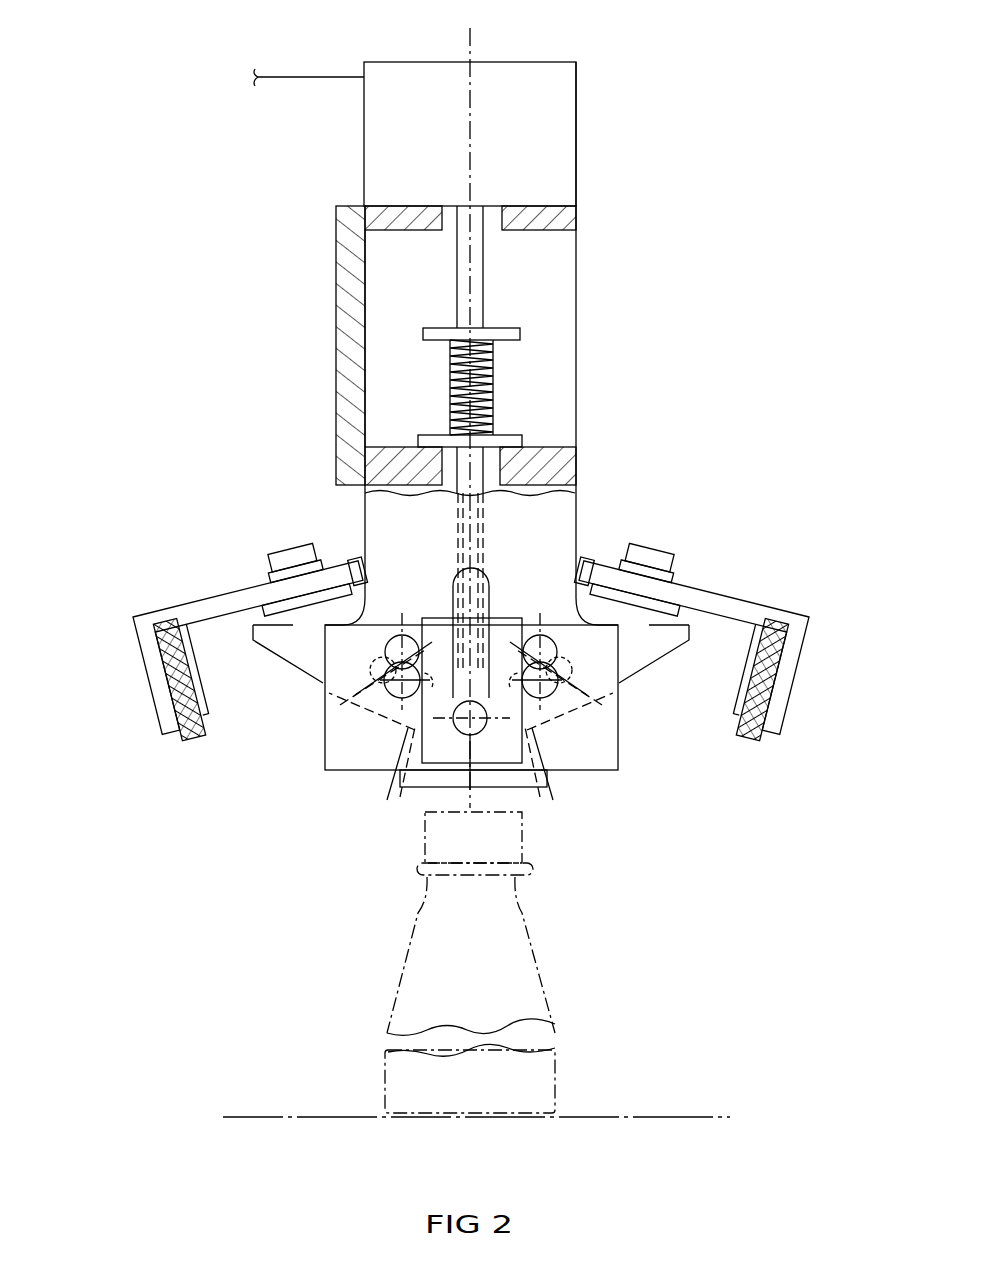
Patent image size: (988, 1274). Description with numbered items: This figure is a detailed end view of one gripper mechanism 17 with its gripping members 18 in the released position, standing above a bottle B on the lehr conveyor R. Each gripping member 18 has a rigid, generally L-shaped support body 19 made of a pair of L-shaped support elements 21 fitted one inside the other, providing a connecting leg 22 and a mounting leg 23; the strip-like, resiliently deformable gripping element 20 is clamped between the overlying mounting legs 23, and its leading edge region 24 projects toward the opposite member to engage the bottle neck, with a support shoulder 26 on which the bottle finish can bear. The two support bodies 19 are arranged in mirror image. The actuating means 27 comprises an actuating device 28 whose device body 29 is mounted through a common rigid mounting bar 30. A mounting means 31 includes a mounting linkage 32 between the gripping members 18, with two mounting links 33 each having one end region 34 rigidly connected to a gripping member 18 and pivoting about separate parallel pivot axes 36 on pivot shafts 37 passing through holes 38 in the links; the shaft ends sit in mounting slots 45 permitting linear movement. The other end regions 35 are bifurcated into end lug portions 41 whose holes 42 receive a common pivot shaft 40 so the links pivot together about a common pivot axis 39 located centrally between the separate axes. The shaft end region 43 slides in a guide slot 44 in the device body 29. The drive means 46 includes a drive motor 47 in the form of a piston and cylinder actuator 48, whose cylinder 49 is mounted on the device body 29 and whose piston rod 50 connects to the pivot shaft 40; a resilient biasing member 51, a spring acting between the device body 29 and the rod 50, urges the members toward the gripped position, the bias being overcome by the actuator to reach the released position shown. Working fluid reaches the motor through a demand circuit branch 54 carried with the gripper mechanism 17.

The gripper mechanism 17 is at (192, 268).
The gripping member 18 is at (110, 656).
The support body 19 is at (145, 712).
The gripping element 20 is at (172, 760).
The support element 21 is at (134, 612).
The connecting leg 22 is at (236, 596).
The mounting leg 23 is at (160, 688).
The leading edge region 24 is at (170, 745).
The support shoulder 26 is at (198, 734).
The actuating means 27 is at (668, 487).
The actuating device 28 is at (608, 474).
The device body 29 is at (552, 298).
The mounting bar 30 is at (340, 355).
The mounting means 31 is at (552, 560).
The mounting linkage 32 is at (342, 762).
The mounting link 33 is at (350, 700).
The end region 34 is at (272, 632).
The other end region 35 is at (500, 773).
The pivot axis 36 is at (385, 690).
The pivot shaft 37 is at (400, 700).
The hole 38 is at (330, 660).
The common pivot axis 39 is at (482, 736).
The pivot shaft 40 is at (460, 790).
The end lug portion 41 is at (388, 810).
The hole 42 is at (445, 790).
The shaft end region 43 is at (452, 640).
The guide slot 44 is at (458, 572).
The mounting slot 45 is at (360, 585).
The drive means 46 is at (636, 150).
The drive motor 47 is at (538, 120).
The piston and cylinder actuator 48 is at (552, 168).
The cylinder 49 is at (577, 193).
The piston rod 50 is at (485, 258).
The resilient biasing member 51 is at (493, 376).
The demand circuit branch 54 is at (310, 70).
The bottle B is at (497, 948).
The lehr conveyor R is at (622, 1112).